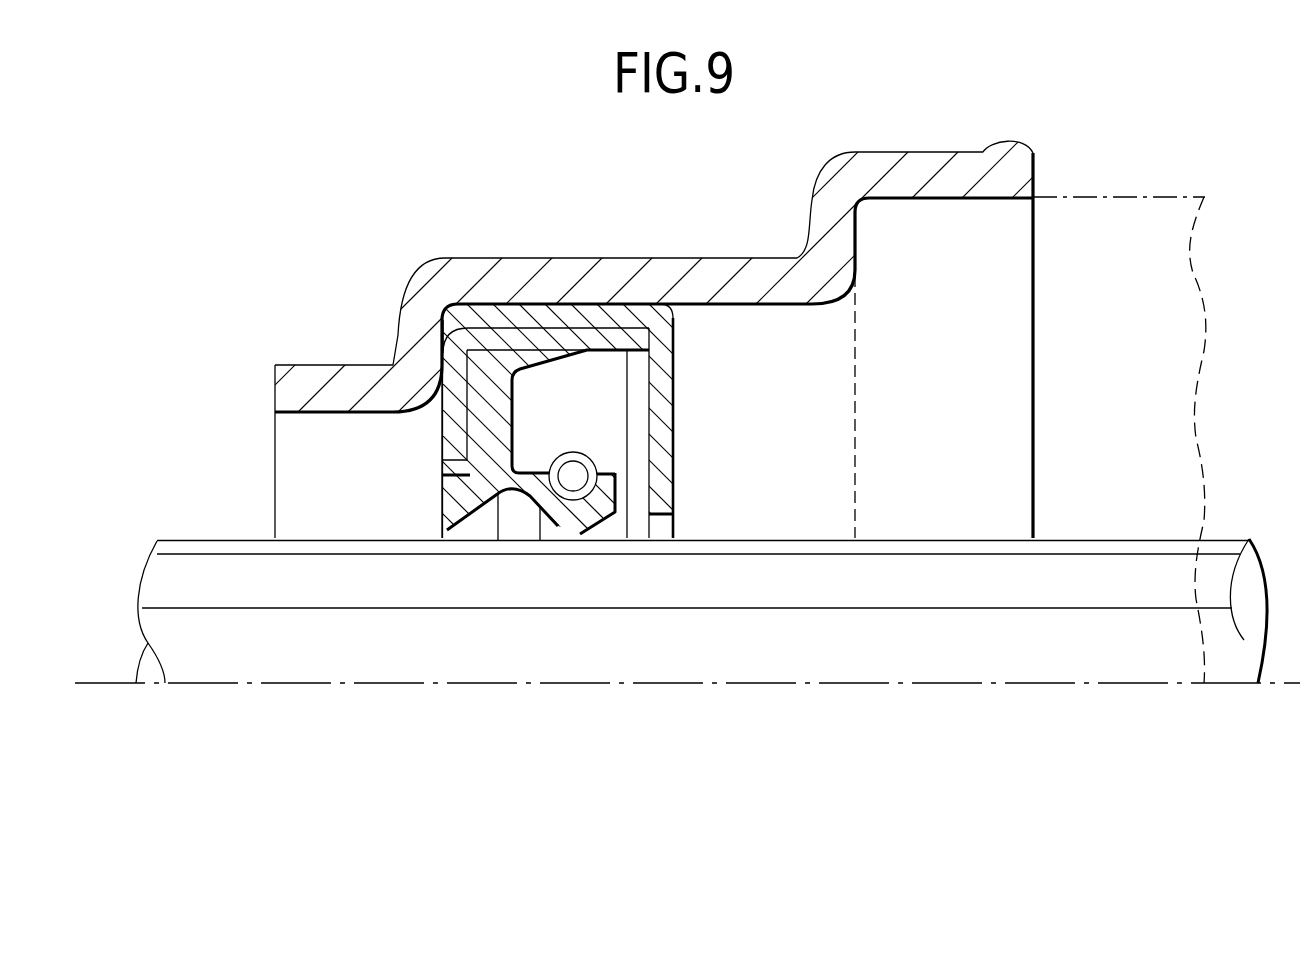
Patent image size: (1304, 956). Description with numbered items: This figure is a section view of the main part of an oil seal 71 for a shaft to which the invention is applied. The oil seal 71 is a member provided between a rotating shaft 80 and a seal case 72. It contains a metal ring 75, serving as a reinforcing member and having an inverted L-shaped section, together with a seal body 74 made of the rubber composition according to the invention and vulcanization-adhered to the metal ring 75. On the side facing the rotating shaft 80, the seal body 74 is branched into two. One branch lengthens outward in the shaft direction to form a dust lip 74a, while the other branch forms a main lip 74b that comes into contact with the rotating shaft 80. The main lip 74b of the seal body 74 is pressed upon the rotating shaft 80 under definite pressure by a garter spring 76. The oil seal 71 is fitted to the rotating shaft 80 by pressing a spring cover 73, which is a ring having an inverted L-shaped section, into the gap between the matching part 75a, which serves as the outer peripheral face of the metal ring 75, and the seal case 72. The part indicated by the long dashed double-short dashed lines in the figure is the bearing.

The oil seal 71 is at (557, 475).
The seal case 72 is at (602, 259).
The spring cover 73 is at (662, 382).
The seal body 74 is at (518, 406).
The dust lip 74a is at (449, 524).
The main lip 74b is at (594, 514).
The metal ring 75 is at (455, 324).
The matching part 75a is at (533, 337).
The garter spring 76 is at (551, 502).
The rotating shaft 80 is at (295, 656).